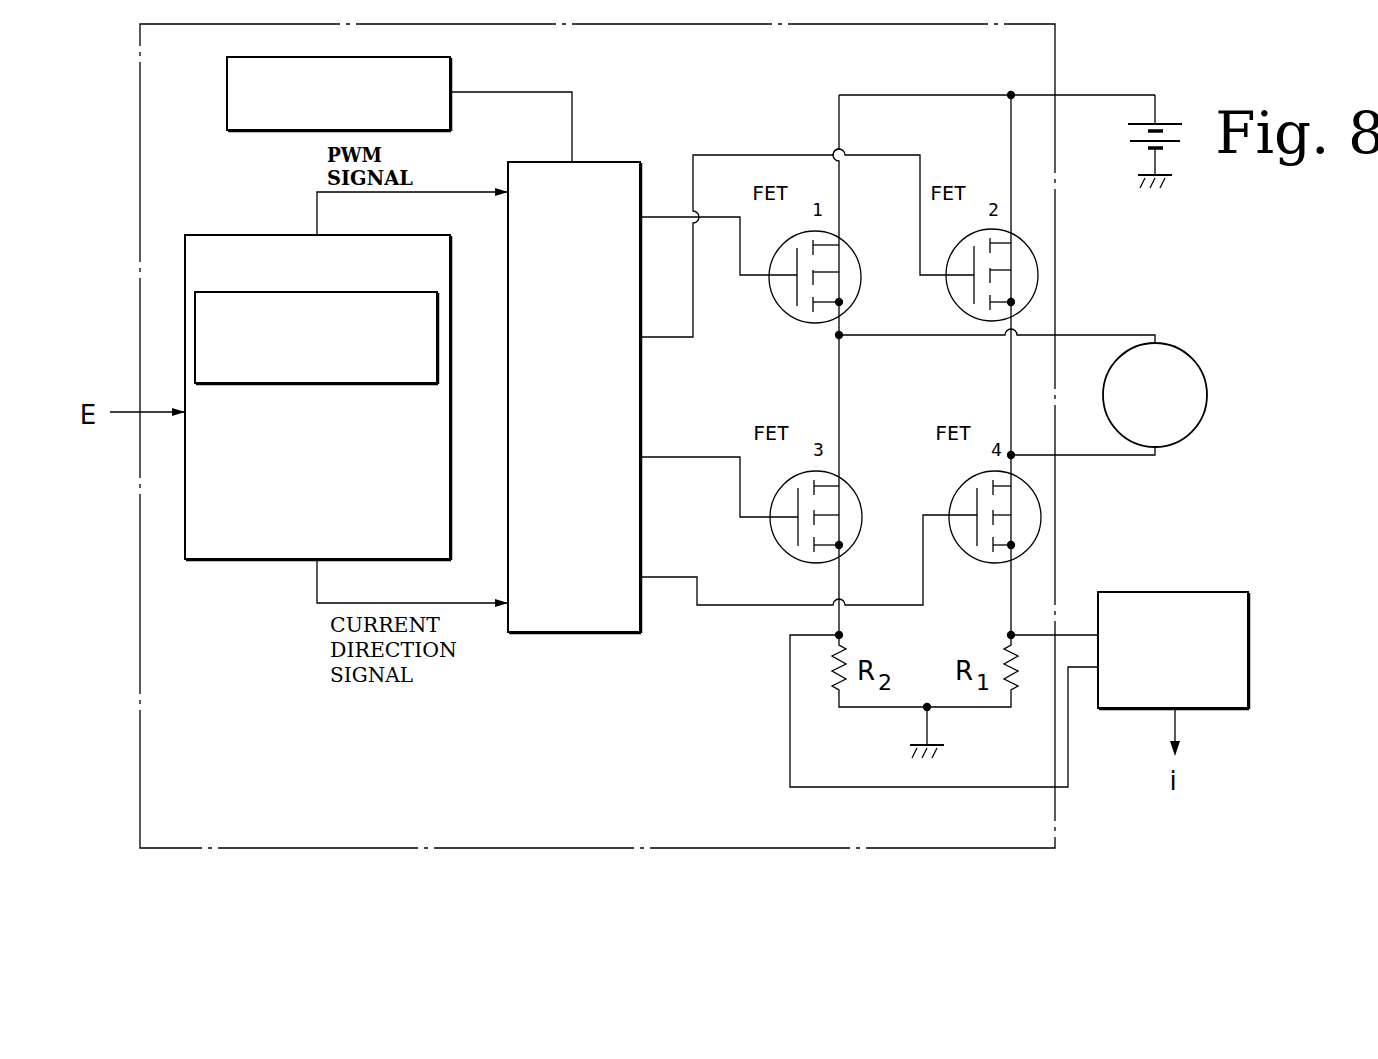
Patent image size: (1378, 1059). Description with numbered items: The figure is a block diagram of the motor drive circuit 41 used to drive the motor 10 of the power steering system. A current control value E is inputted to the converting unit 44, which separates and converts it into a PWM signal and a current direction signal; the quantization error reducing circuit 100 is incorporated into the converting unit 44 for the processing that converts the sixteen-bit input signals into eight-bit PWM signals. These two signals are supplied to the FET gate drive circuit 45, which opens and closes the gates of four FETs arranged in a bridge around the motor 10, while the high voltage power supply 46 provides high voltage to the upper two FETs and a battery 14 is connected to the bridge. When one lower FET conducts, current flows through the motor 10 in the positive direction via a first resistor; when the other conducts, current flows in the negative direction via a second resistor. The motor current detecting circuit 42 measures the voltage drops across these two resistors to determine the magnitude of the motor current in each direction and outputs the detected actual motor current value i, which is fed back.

The motor 10 is at (1155, 343).
The battery 14 is at (1165, 112).
The motor drive circuit 41 is at (1056, 78).
The motor current detecting circuit 42 is at (1170, 592).
The converting unit 44 is at (237, 560).
The FET gate drive circuit 45 is at (590, 634).
The high voltage power supply 46 is at (450, 76).
The quantization error reducing circuit 100 is at (247, 292).